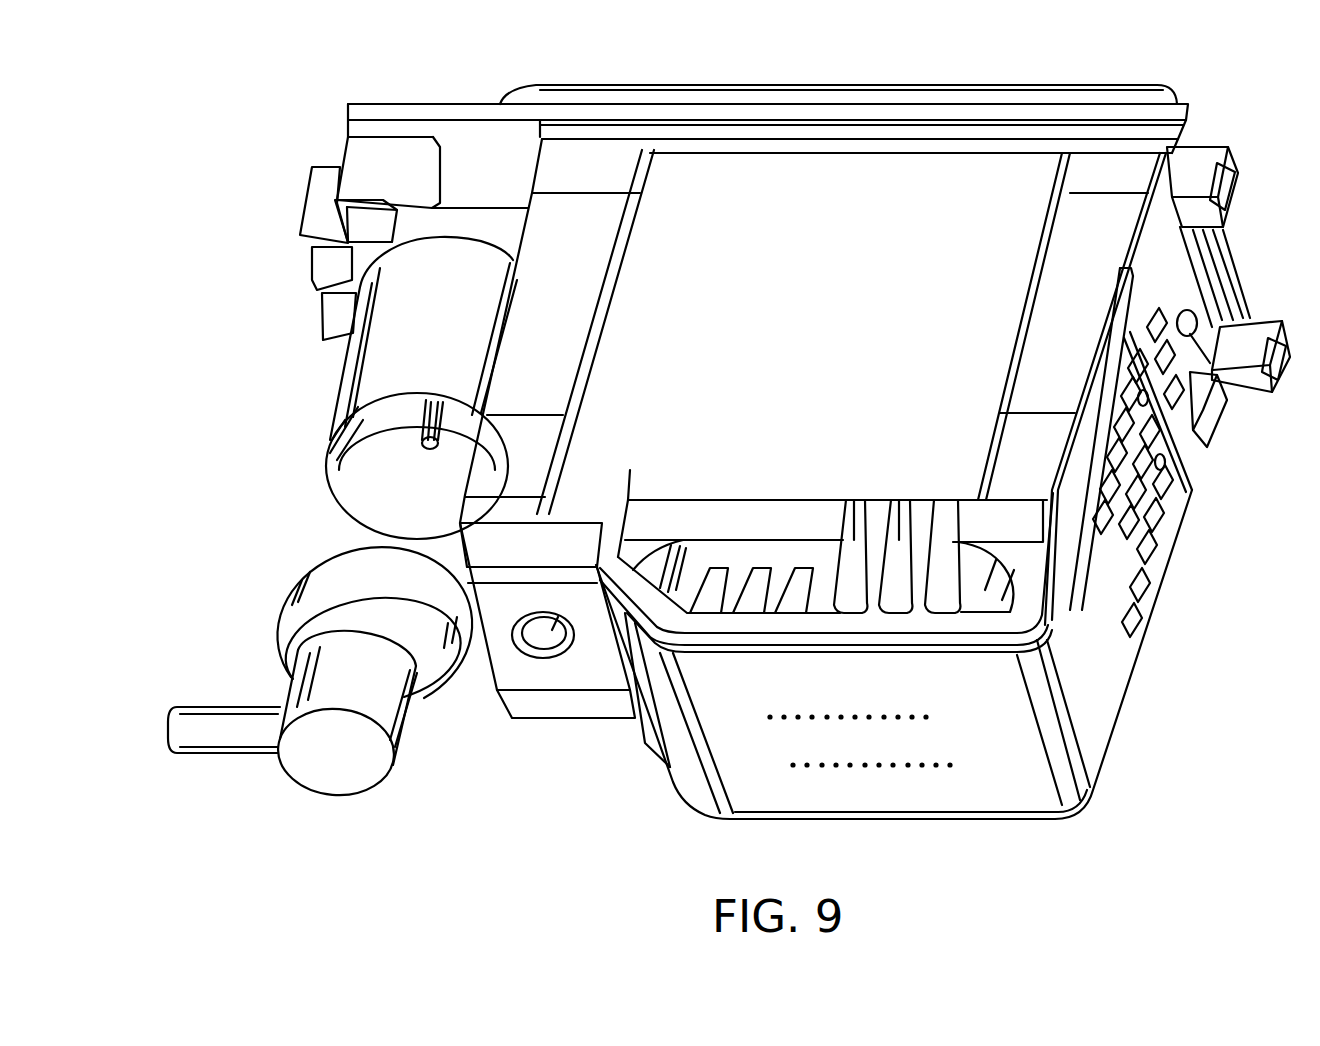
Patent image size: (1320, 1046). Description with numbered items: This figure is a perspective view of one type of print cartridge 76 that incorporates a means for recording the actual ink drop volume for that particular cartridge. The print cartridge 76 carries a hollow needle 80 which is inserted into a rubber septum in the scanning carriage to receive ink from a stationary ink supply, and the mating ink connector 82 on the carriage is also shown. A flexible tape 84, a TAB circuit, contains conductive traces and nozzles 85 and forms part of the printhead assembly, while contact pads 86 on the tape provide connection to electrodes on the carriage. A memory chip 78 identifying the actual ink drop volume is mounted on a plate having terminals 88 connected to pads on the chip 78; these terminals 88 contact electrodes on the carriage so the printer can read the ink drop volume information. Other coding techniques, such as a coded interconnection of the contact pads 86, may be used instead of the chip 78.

The print cartridge 76 is at (325, 85).
The memory chip 78 is at (1213, 400).
The hollow needle 80 is at (357, 420).
The ink connector 82 is at (270, 587).
The flexible tape 84 is at (990, 802).
The nozzles 85 is at (948, 766).
The contact pads 86 is at (1133, 618).
The terminals 88 is at (1205, 446).